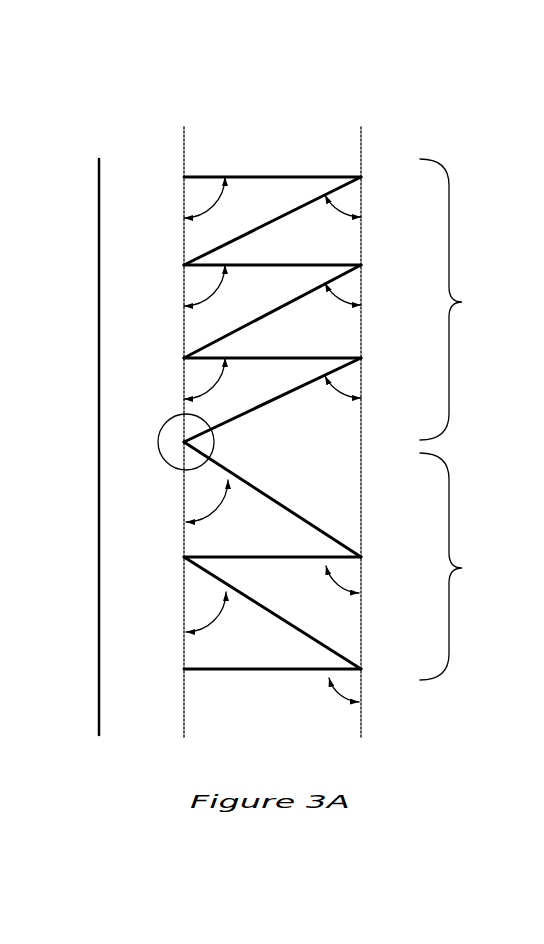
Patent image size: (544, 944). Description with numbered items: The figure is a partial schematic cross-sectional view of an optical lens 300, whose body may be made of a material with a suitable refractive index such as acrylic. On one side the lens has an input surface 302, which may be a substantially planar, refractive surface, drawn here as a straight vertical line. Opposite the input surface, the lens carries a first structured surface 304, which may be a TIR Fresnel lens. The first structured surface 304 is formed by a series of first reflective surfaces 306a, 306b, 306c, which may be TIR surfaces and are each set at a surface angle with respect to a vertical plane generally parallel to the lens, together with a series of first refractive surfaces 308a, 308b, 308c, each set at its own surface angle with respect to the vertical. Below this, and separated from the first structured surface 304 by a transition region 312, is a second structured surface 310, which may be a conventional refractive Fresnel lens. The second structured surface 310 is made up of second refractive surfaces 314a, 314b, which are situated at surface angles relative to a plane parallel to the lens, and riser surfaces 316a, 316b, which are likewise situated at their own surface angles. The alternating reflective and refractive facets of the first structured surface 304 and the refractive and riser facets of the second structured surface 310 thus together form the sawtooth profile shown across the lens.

The optical lens 300 is at (117, 126).
The input surface 302 is at (98, 243).
The first structured surface 304 is at (459, 299).
The first reflective surface 306a is at (196, 180).
The first reflective surface 306b is at (196, 268).
The first reflective surface 306c is at (197, 360).
The first refractive surface 308a is at (250, 232).
The first refractive surface 308b is at (250, 323).
The first refractive surface 308c is at (255, 408).
The second structured surface 310 is at (459, 566).
The transition region 312 is at (158, 445).
The second refractive surface 314a is at (218, 466).
The second refractive surface 314b is at (206, 571).
The riser surface 316a is at (280, 562).
The riser surface 316b is at (280, 673).